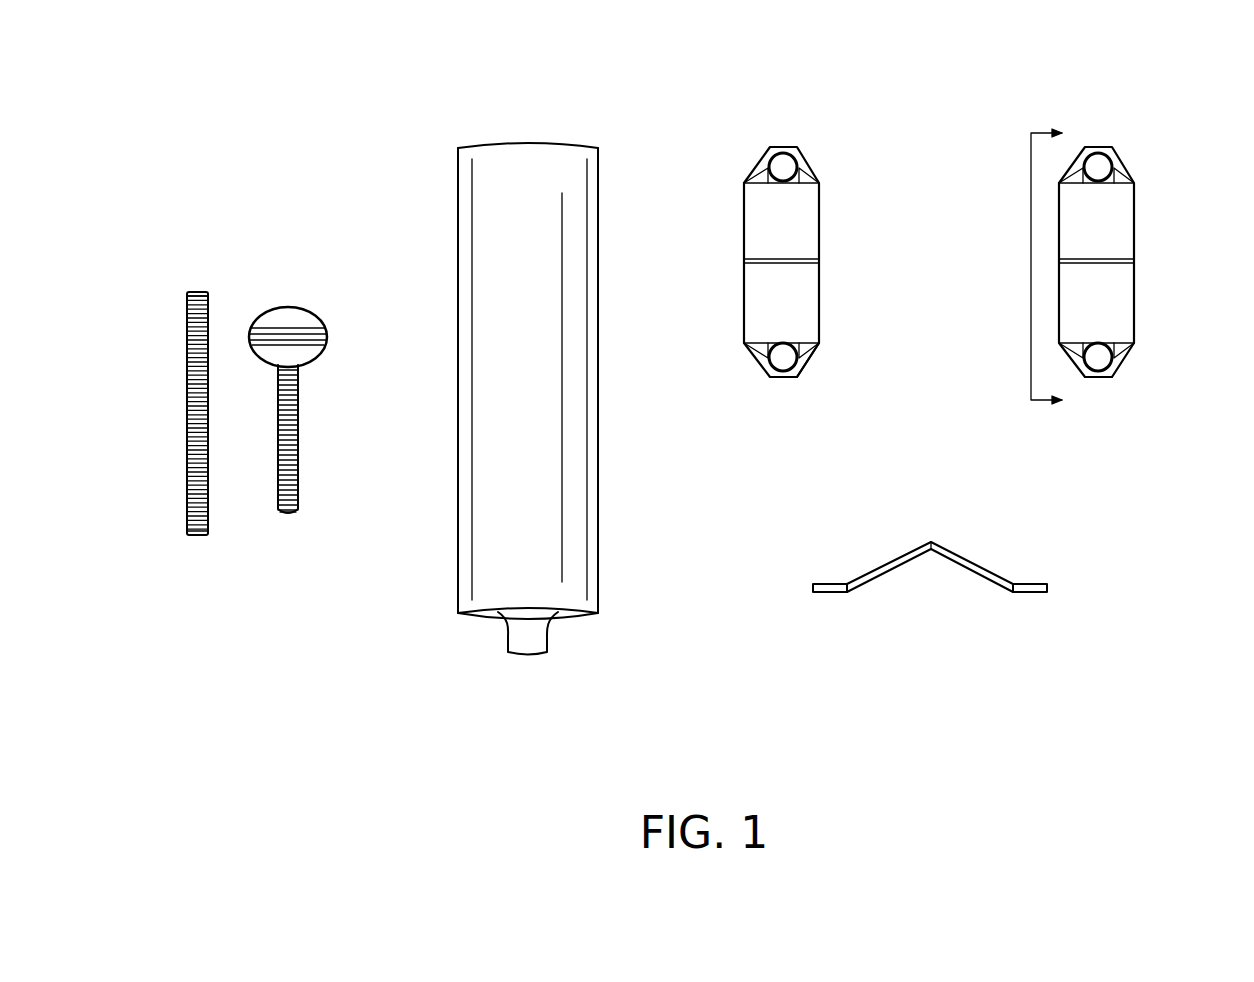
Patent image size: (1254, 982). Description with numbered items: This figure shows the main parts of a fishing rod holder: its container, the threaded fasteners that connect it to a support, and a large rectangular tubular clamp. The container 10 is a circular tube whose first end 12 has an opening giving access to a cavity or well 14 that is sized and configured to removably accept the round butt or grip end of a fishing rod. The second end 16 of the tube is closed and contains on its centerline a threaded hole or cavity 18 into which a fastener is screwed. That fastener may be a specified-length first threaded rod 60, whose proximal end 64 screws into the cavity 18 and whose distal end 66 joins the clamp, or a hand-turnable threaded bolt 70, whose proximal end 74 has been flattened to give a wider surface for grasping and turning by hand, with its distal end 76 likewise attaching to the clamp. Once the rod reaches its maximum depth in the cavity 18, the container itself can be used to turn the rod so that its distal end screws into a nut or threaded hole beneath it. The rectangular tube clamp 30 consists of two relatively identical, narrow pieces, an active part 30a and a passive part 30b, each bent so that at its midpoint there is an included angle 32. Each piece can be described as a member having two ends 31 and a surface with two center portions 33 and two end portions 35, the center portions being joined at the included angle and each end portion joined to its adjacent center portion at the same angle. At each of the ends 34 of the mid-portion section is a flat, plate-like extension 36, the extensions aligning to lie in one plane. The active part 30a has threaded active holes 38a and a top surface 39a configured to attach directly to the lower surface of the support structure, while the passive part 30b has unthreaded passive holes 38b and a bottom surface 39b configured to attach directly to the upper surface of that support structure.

The container 10 is at (478, 530).
The first end 12 is at (568, 150).
The cavity or well 14 is at (532, 143).
The second end 16 is at (577, 602).
The threaded hole or cavity 18 is at (522, 645).
The rectangular tube clamp 30 is at (960, 539).
The active part 30a is at (805, 210).
The passive part 30b is at (1134, 345).
The ends 31 is at (783, 147).
The included angle 32 is at (819, 253).
The center portions 33 is at (744, 283).
The ends of mid-portion sections 34 is at (819, 328).
The end portions 35 is at (753, 177).
The plate-like extension 36 is at (805, 368).
The active holes 38a is at (778, 365).
The passive holes 38b is at (1090, 365).
The top surface 39a is at (819, 272).
The bottom surface 39b is at (1134, 247).
The first threaded rod 60 is at (195, 397).
The proximal end 64 is at (200, 292).
The distal end 66 is at (200, 537).
The hand-turnable threaded bolt 70 is at (292, 437).
The proximal end 74 is at (288, 318).
The distal end 76 is at (281, 497).